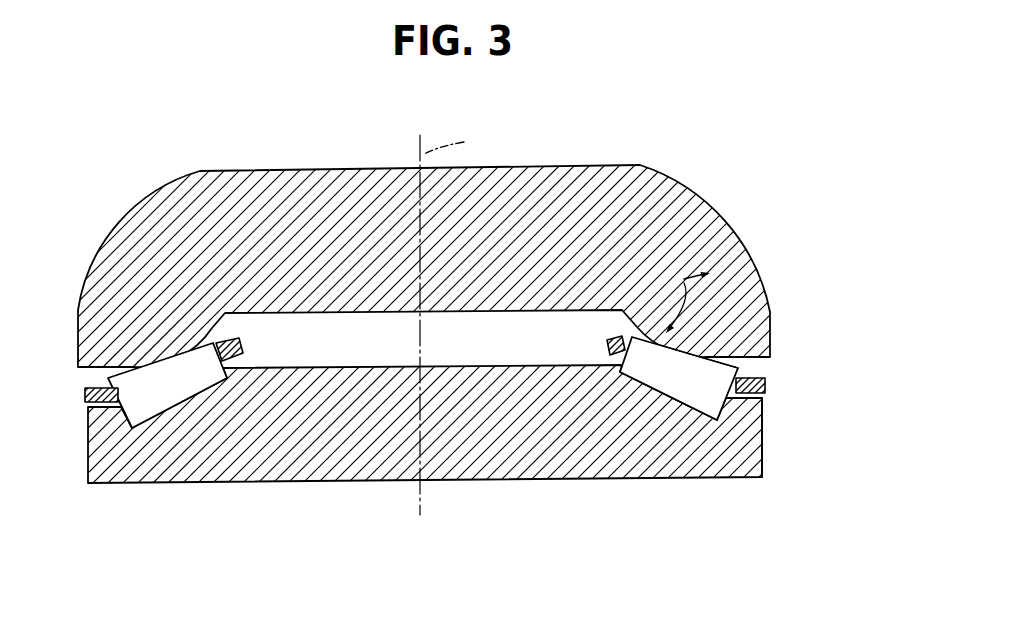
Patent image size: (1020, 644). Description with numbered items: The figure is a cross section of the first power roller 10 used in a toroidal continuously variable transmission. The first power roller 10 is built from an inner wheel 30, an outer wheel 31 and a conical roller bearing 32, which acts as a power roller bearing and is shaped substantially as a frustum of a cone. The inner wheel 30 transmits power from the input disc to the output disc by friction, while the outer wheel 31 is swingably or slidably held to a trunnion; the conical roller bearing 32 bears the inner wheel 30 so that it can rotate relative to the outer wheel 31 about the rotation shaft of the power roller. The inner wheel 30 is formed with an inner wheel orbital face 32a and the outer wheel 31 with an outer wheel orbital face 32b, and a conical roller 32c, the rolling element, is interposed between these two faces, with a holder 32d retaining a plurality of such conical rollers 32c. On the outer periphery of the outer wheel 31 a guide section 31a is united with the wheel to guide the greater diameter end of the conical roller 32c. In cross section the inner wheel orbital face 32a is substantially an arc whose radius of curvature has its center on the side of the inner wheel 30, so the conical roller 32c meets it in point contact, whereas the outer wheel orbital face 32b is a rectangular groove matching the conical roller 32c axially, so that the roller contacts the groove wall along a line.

The first power roller 10 is at (141, 144).
The inner wheel 30 is at (706, 190).
The outer wheel 31 is at (562, 483).
The guide section 31a is at (740, 431).
The conical roller bearing 32 is at (593, 339).
The inner wheel orbital face 32a is at (688, 360).
The outer wheel orbital face 32b is at (668, 392).
The conical roller 32c is at (713, 370).
The holder 32d is at (757, 377).